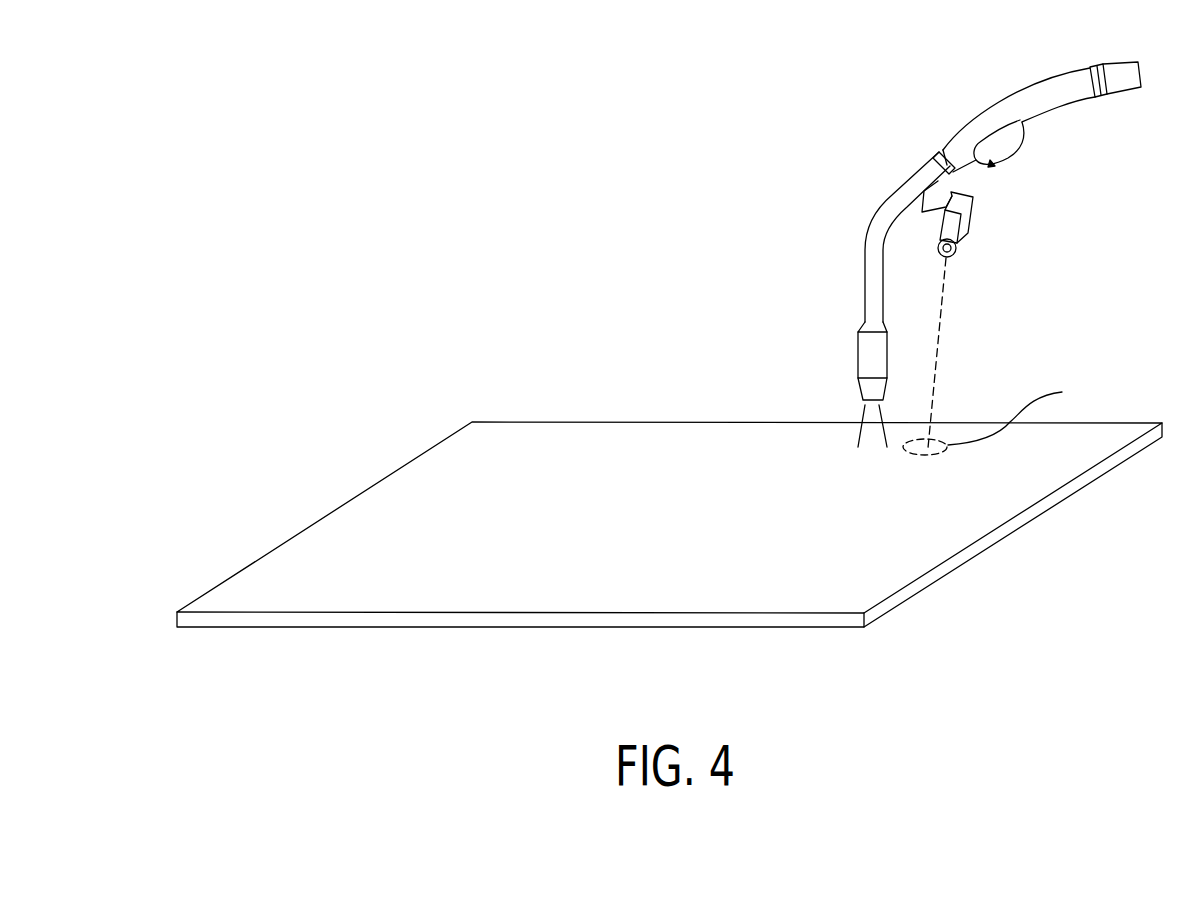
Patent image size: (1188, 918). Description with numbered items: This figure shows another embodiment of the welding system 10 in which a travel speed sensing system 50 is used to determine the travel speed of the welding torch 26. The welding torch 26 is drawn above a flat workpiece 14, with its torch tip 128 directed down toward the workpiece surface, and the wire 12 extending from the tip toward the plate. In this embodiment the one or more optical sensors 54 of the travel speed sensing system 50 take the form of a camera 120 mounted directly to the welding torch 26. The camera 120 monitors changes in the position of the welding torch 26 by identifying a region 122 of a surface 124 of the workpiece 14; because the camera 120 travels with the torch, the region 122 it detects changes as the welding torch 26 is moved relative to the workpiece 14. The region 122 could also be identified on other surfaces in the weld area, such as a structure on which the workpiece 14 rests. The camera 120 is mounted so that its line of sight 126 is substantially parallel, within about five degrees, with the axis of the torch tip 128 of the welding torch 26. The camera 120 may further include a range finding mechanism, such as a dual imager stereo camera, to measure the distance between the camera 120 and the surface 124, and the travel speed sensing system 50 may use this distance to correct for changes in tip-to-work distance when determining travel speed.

The welding system 10 is at (483, 225).
The welding wire 12 is at (872, 438).
The workpiece 14 is at (568, 603).
The welding torch 26 is at (921, 189).
The travel speed sensing system 50 is at (1062, 197).
The optical sensors 54 is at (1012, 219).
The camera 120 is at (968, 230).
The region 122 is at (1026, 407).
The surface 124 is at (1022, 485).
The line of sight 126 is at (937, 350).
The torch tip 128 is at (857, 357).